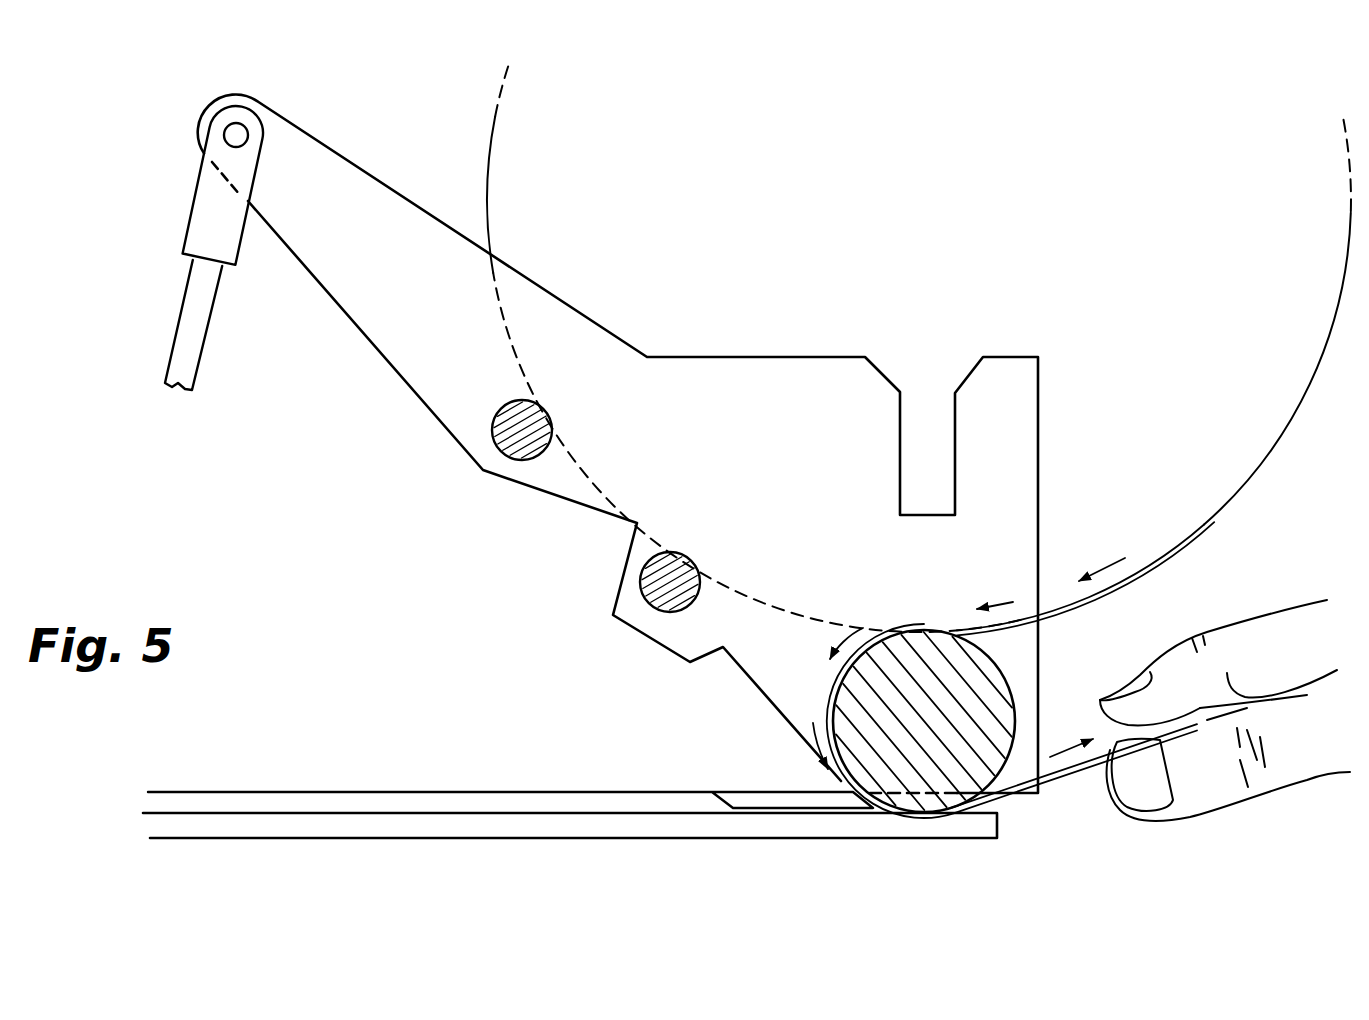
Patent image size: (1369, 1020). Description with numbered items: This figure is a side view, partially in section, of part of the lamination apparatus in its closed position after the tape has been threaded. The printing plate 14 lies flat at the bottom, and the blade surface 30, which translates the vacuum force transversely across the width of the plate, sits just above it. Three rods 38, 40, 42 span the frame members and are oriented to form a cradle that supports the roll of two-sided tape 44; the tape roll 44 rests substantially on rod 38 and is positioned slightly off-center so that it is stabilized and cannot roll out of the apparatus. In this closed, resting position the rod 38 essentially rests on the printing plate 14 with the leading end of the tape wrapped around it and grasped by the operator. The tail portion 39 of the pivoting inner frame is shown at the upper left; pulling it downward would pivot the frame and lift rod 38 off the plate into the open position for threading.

The printing plate 14 is at (513, 825).
The blade surface 30 is at (763, 800).
The rod 38 is at (870, 707).
The tail portion 39 is at (317, 173).
The rod 40 is at (663, 583).
The rod 42 is at (500, 423).
The roll of two-sided tape 44 is at (1156, 258).